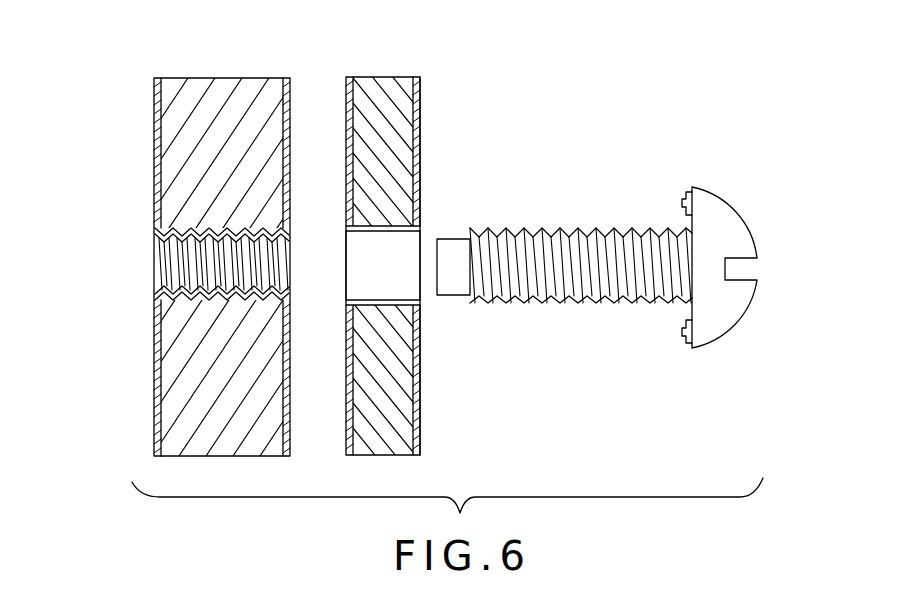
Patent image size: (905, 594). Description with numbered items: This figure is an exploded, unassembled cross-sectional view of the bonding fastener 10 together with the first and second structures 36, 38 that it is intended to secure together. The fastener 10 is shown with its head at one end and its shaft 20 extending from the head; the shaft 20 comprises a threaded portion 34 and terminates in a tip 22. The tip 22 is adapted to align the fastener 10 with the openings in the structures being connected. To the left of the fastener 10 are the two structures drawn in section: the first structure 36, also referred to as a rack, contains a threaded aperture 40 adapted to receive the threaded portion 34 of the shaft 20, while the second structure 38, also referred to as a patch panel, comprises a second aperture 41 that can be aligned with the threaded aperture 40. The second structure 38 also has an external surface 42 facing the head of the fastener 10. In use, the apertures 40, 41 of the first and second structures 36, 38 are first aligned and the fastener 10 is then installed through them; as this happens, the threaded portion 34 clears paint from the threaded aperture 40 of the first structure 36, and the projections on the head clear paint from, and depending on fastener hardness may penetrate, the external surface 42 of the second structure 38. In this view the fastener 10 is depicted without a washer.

The bonding fastener 10 is at (748, 190).
The shaft 20 is at (645, 269).
The tip 22 is at (453, 293).
The threaded portion 34 is at (545, 303).
The first structure 36 is at (235, 82).
The second structure 38 is at (450, 252).
The threaded aperture 40 is at (187, 228).
The second aperture 41 is at (400, 248).
The external surface 42 is at (422, 155).